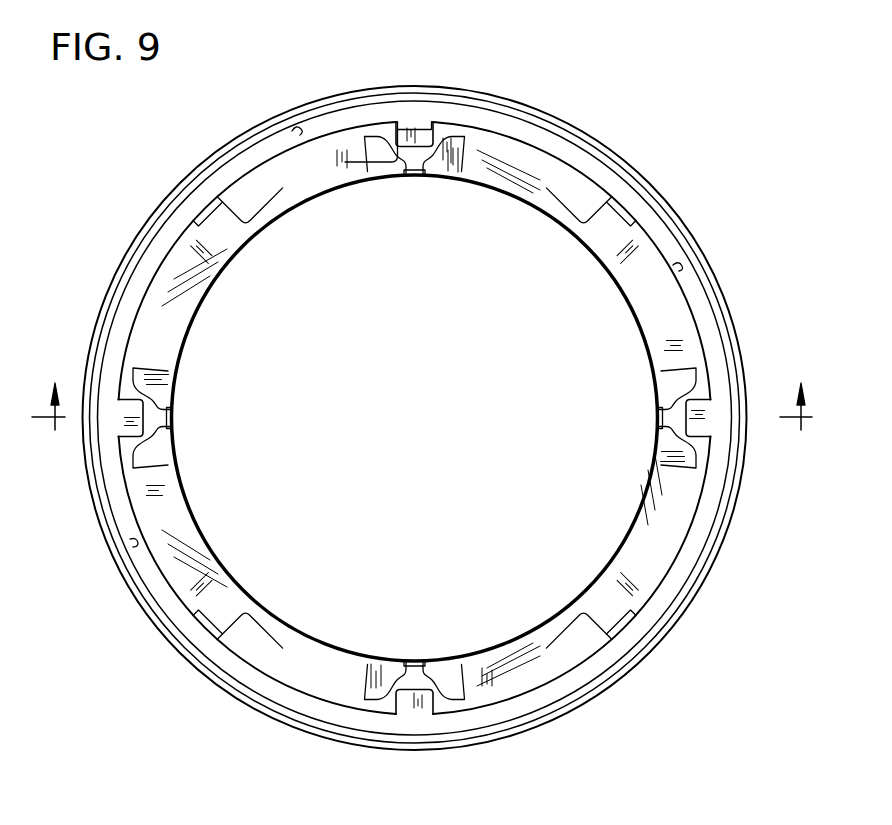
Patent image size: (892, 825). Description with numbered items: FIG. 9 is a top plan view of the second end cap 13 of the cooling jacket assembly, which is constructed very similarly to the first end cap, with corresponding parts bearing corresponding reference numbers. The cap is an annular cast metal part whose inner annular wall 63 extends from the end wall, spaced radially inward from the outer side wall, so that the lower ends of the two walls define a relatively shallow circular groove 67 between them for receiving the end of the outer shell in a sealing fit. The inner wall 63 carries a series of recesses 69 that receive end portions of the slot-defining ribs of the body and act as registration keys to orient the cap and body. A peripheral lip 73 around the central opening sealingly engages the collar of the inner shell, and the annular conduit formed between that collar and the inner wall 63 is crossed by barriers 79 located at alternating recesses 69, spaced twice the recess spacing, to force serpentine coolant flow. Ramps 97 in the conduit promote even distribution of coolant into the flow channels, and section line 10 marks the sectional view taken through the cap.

The second end cap 13 is at (556, 119).
The inner annular wall 63 is at (162, 522).
The circular groove 67 is at (296, 127).
The recesses 69 is at (420, 143).
The peripheral lip 73 is at (640, 528).
The barriers 79 is at (414, 663).
The ramps 97 is at (586, 230).
The section line 10 is at (427, 415).